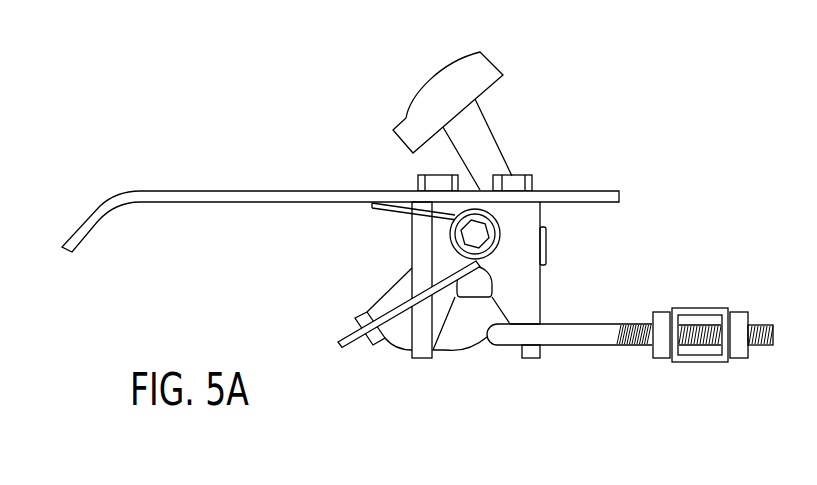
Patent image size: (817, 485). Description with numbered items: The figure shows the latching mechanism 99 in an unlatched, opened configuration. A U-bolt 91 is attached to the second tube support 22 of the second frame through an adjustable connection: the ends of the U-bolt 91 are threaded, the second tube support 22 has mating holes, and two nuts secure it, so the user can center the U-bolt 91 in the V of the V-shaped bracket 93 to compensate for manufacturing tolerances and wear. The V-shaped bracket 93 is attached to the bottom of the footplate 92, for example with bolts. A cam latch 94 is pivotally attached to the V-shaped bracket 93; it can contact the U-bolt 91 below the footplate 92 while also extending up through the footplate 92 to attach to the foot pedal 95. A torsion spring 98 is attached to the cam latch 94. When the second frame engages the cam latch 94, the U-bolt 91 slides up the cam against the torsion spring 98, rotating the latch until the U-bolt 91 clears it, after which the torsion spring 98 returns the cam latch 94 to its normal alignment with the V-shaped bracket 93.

The second tube support 22 is at (768, 287).
The U-bolt 91 is at (628, 382).
The footplate 92 is at (300, 125).
The V-shaped bracket 93 is at (586, 283).
The cam latch 94 is at (490, 380).
The foot pedal 95 is at (537, 45).
The torsion spring 98 is at (353, 380).
The latching mechanism 99 is at (427, 257).